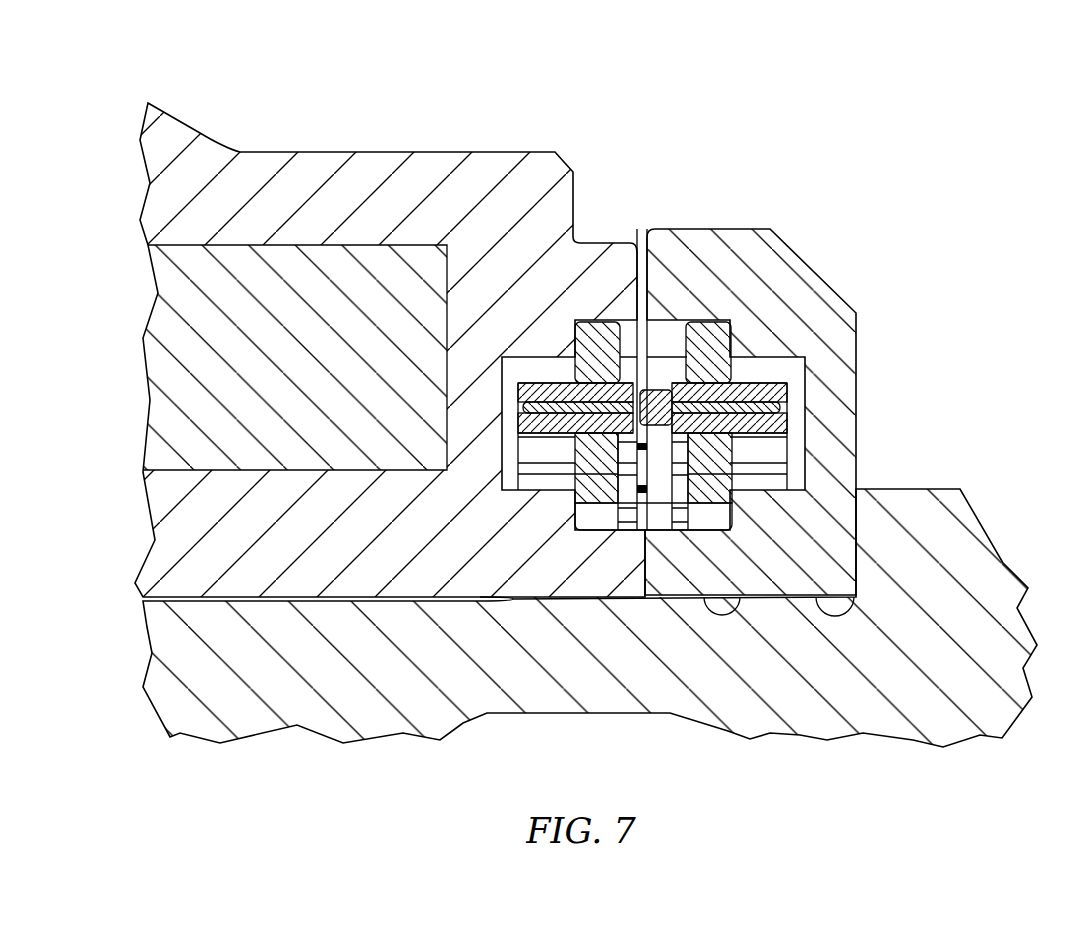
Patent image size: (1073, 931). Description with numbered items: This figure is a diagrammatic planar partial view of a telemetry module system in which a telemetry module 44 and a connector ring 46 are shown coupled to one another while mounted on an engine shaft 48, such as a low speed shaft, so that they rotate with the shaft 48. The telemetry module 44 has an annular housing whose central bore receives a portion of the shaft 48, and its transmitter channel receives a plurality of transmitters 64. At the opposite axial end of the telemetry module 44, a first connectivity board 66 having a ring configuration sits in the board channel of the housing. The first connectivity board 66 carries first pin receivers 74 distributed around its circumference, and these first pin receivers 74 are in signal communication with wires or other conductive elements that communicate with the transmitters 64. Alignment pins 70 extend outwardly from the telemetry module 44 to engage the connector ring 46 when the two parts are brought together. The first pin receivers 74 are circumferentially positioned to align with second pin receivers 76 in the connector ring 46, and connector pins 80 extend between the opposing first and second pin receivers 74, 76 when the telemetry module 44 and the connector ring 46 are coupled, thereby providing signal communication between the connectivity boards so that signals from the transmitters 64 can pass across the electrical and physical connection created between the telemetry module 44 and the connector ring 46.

The telemetry module 44 is at (336, 112).
The connector ring 46 is at (840, 174).
The engine shaft 48 is at (311, 695).
The transmitters 64 is at (265, 472).
The first connectivity board 66 is at (594, 310).
The alignment pins 70 is at (711, 308).
The first pin receivers 74 is at (538, 397).
The second pin receivers 76 is at (780, 424).
The connector pins 80 is at (657, 445).